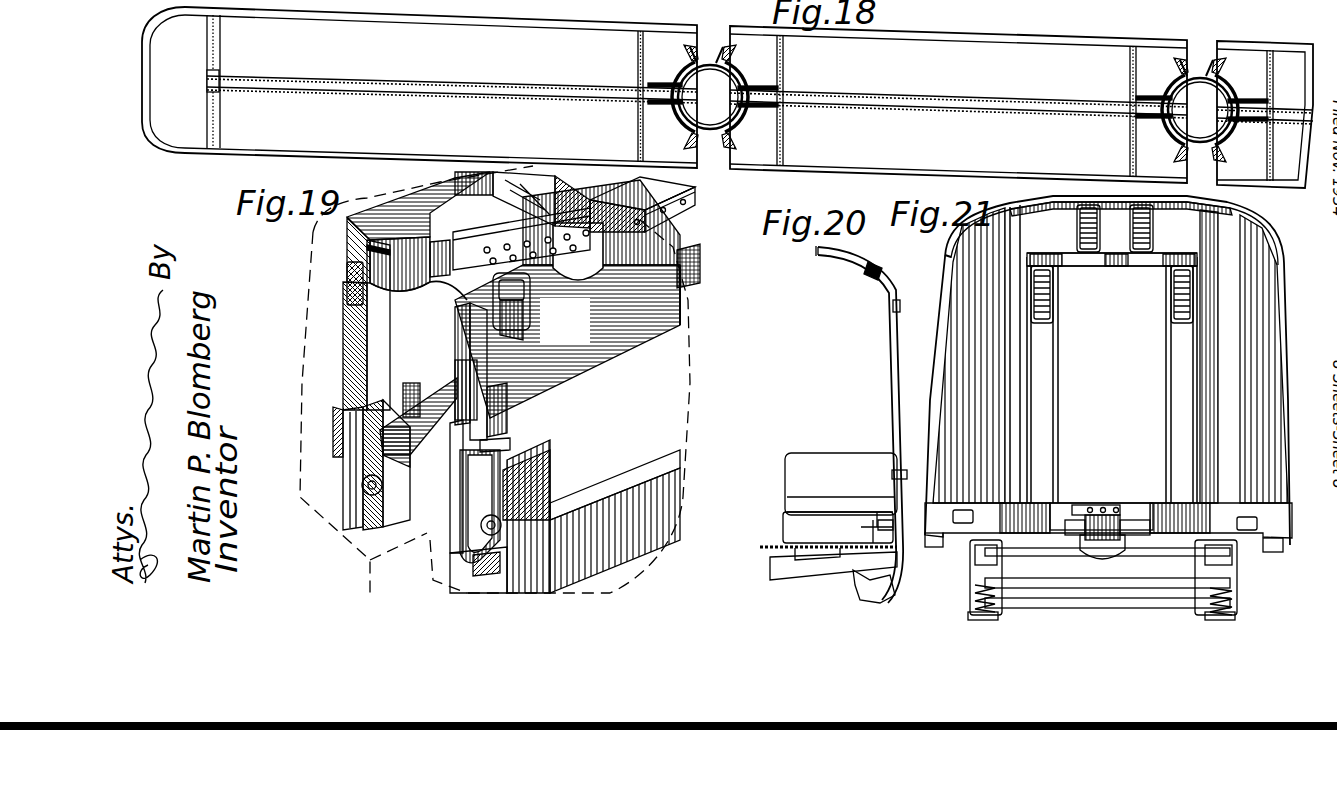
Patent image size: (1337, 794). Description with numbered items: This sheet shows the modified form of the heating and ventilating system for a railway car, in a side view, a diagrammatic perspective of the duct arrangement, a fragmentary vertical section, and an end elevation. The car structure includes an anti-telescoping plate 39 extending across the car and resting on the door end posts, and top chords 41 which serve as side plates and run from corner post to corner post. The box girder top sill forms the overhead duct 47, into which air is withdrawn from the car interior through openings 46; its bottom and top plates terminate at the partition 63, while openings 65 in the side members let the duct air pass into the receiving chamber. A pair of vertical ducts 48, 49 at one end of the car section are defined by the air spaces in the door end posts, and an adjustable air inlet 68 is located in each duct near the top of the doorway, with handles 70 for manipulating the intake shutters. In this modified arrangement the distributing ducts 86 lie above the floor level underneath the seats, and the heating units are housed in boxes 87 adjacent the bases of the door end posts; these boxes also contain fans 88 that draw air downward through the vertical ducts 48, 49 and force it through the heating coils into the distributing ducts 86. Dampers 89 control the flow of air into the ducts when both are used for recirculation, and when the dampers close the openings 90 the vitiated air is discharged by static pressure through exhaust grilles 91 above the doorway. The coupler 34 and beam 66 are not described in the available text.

In FIG. 21, the coupler 34 is at (1070, 503).
In FIG. 19, the anti-telescoping plate 39 is at (612, 370).
In FIG. 20, the top chord 41 is at (874, 293).
In FIG. 18, the opening 46 is at (443, 80).
In FIG. 19, the opening 46 is at (683, 206).
In FIG. 18, the overhead duct 47 is at (535, 73).
In FIG. 19, the overhead duct 47 is at (693, 190).
In FIG. 18, the vertical duct 48 is at (700, 135).
In FIG. 19, the vertical duct 48 is at (352, 336).
In FIG. 21, the vertical duct 48 is at (1052, 359).
In FIG. 18, the vertical duct 49 is at (722, 52).
In FIG. 19, the vertical duct 49 is at (510, 470).
In FIG. 21, the vertical duct 49 is at (1175, 396).
In FIG. 18, the partition 63 is at (639, 46).
In FIG. 19, the partition 63 is at (690, 312).
In FIG. 19, the opening 65 is at (606, 262).
In FIG. 19, the beam 66 is at (670, 352).
In FIG. 19, the air inlet 68 is at (350, 275).
In FIG. 21, the air inlet 68 is at (1180, 290).
In FIG. 19, the handle 70 is at (372, 315).
In FIG. 19, the distributing duct 86 is at (415, 398).
In FIG. 20, the distributing duct 86 is at (875, 527).
In FIG. 19, the box 87 is at (400, 455).
In FIG. 19, the fan 88 is at (380, 492).
In FIG. 18, the damper 89 is at (668, 84).
In FIG. 19, the damper 89 is at (530, 300).
In FIG. 18, the opening 90 is at (676, 120).
In FIG. 19, the opening 90 is at (524, 322).
In FIG. 19, the exhaust grille 91 is at (438, 268).
In FIG. 21, the exhaust grille 91 is at (1142, 245).